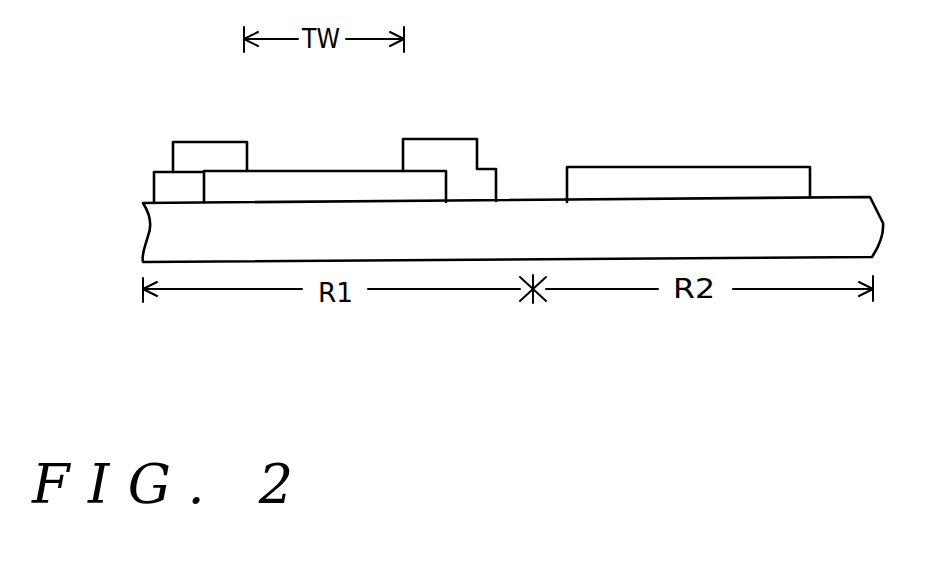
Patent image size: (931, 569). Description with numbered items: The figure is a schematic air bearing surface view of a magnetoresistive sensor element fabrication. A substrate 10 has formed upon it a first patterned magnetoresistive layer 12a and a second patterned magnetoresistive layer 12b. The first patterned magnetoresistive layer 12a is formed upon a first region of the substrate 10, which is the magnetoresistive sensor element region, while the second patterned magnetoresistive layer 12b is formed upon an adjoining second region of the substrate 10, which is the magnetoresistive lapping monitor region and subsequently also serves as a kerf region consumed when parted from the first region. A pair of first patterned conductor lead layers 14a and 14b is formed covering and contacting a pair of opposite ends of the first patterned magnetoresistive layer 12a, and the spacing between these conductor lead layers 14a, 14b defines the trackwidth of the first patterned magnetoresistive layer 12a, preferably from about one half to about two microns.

The substrate 10 is at (168, 233).
The first patterned magnetoresistive (MR) layer 12a is at (319, 184).
The second patterned magnetoresistive (MR) layer 12b is at (678, 178).
The first patterned conductor lead layer 14a is at (205, 148).
The first patterned conductor lead layer 14b is at (431, 148).